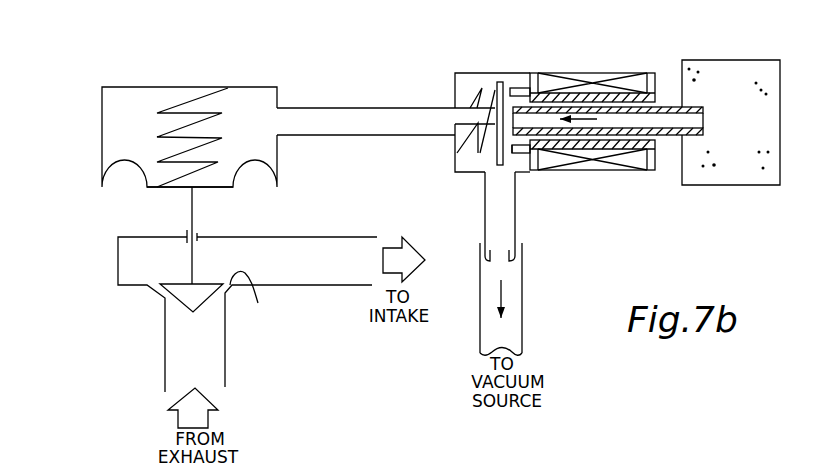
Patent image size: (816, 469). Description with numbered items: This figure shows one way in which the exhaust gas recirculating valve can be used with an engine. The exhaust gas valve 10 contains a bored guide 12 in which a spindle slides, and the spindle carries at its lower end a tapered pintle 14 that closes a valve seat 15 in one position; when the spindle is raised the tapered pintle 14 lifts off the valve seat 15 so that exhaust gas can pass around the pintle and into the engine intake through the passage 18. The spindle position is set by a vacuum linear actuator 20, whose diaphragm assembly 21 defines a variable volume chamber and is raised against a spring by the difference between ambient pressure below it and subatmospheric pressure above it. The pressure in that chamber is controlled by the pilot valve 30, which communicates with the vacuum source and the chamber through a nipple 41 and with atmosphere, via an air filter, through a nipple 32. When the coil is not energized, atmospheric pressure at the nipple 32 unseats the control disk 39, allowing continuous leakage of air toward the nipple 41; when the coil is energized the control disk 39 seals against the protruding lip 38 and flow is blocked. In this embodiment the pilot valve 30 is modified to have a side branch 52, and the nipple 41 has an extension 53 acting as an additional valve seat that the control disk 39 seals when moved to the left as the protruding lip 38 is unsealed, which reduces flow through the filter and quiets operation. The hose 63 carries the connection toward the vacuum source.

The exhaust gas valve 10 is at (107, 270).
The bored guide 12 is at (185, 235).
The tapered pintle 14 is at (177, 299).
The valve seat 15 is at (257, 295).
The passage 18 is at (303, 243).
The vacuum linear actuator 20 is at (97, 125).
The diaphragm assembly 21 is at (217, 188).
The pilot valve 30 is at (597, 70).
The nipple 32 is at (665, 105).
The protruding lip 38 is at (515, 148).
The control disk 39 is at (503, 78).
The nipple 41 is at (428, 117).
The side branch 52 is at (482, 220).
The extension 53 is at (488, 102).
The vacuum hose 63 is at (498, 260).